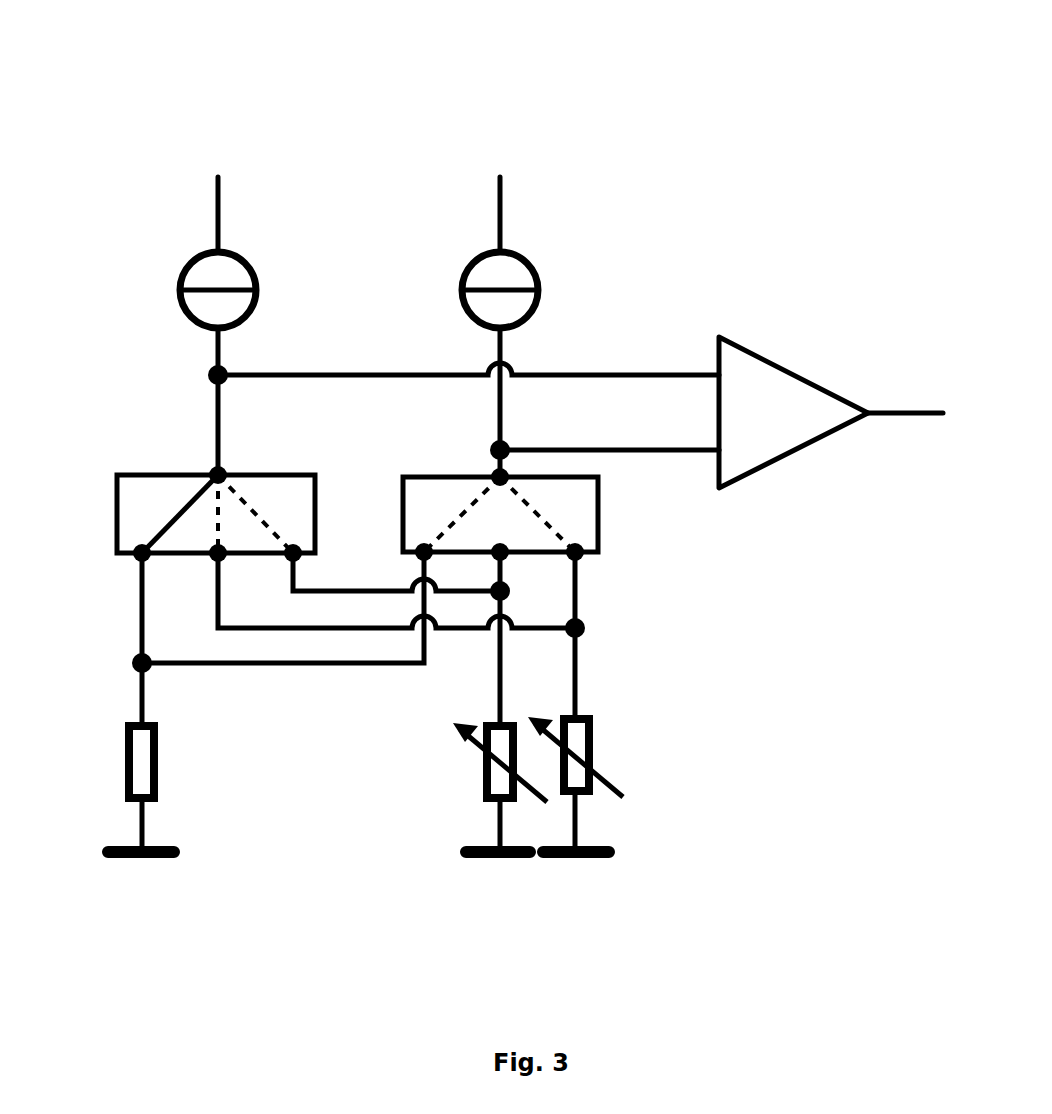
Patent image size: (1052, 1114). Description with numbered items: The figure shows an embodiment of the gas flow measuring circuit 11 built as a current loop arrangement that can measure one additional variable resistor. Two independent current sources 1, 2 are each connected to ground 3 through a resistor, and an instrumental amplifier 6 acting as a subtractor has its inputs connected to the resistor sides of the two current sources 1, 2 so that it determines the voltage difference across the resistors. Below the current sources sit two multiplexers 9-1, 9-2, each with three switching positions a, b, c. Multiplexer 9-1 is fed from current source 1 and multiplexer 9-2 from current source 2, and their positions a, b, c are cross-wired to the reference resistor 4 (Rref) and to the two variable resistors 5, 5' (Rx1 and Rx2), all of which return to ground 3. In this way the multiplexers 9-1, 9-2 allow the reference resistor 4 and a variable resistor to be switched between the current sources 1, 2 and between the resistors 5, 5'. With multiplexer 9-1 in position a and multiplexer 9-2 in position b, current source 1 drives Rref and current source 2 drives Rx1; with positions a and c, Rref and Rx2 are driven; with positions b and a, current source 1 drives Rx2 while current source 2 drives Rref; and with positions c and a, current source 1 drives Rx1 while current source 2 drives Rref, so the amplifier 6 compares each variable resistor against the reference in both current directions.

The gas flow measuring circuit 11 is at (282, 103).
The current source 1 is at (178, 295).
The current source 2 is at (538, 290).
The ground 3 is at (177, 855).
The reference resistor 4 is at (125, 762).
The variable resistor 5 is at (468, 762).
The variable resistor 5' is at (610, 757).
The instrumental amplifier 6 is at (758, 458).
The multiplexer 9-1 is at (167, 500).
The multiplexer 9-2 is at (600, 513).
The switching position a is at (142, 556).
The switching position b is at (218, 556).
The switching position c is at (293, 556).